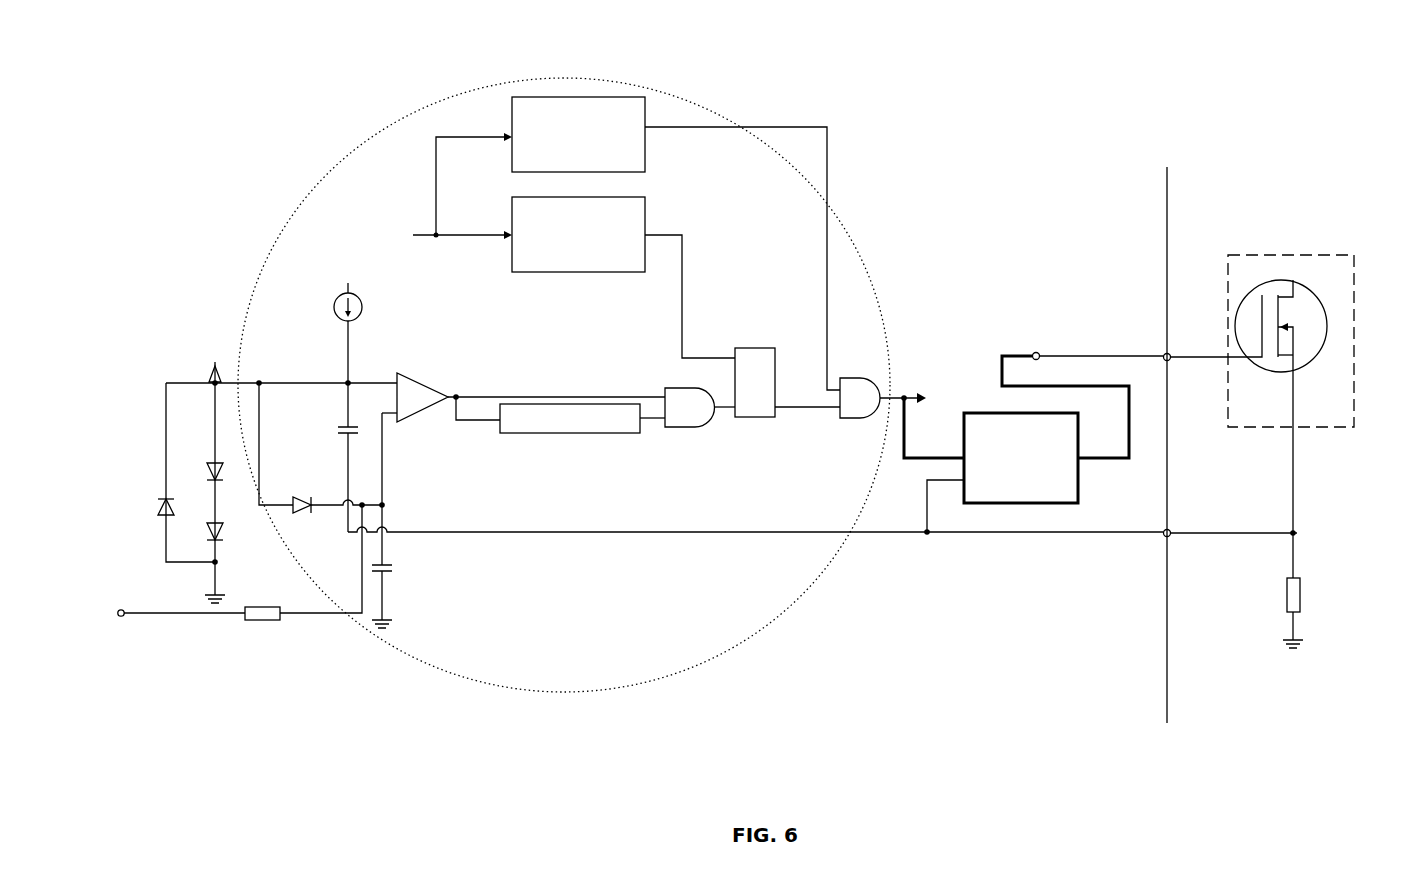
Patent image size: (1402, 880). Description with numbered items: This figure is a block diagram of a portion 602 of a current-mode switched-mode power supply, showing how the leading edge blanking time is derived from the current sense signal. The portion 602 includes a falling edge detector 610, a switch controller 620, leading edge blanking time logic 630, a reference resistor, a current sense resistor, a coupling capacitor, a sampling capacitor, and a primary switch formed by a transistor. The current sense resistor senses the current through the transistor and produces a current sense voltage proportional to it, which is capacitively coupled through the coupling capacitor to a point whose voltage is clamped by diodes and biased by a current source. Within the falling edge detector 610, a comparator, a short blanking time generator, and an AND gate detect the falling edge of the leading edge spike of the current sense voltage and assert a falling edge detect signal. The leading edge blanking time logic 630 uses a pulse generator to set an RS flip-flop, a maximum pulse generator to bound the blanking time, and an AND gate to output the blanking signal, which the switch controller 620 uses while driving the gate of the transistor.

The portion 602 is at (742, 375).
The falling edge detector 610 is at (188, 482).
The switch controller 620 is at (1033, 444).
The leading edge blanking time logic 630 is at (704, 371).